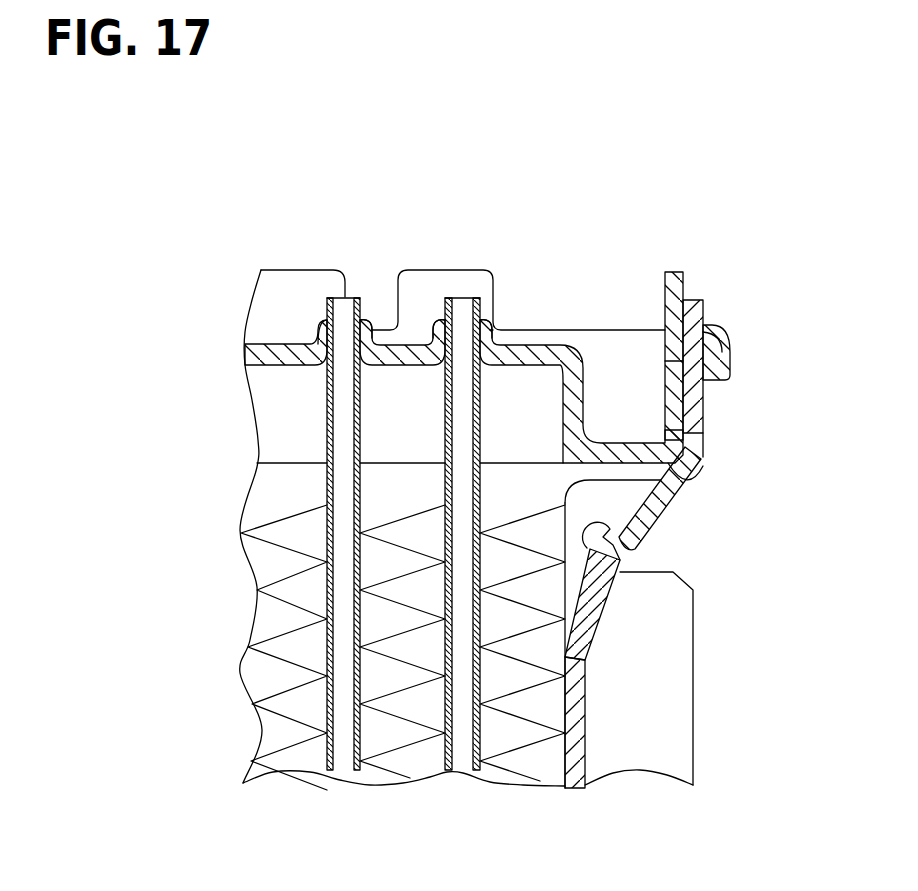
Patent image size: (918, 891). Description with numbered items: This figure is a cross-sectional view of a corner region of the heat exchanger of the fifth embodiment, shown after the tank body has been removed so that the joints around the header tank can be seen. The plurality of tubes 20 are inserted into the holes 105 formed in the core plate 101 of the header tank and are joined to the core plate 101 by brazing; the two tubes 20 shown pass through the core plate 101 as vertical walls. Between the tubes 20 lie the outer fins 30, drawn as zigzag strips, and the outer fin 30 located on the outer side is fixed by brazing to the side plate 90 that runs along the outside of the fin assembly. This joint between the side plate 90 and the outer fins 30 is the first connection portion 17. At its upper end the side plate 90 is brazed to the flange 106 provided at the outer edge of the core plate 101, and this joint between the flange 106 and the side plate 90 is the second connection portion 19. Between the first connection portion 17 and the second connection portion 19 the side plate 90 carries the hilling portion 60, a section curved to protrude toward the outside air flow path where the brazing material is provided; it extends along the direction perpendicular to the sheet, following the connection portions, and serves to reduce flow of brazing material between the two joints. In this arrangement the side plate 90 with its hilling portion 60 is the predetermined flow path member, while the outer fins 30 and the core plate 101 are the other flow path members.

The first connection portion 17 is at (570, 678).
The second connection portion 19 is at (682, 475).
The tubes 20 is at (322, 754).
The outer fins 30 is at (398, 755).
The hilling portion 60 is at (613, 545).
The side plate 90 is at (592, 627).
The core plate 101 is at (522, 352).
The holes 105 is at (330, 325).
The flange 106 is at (675, 382).